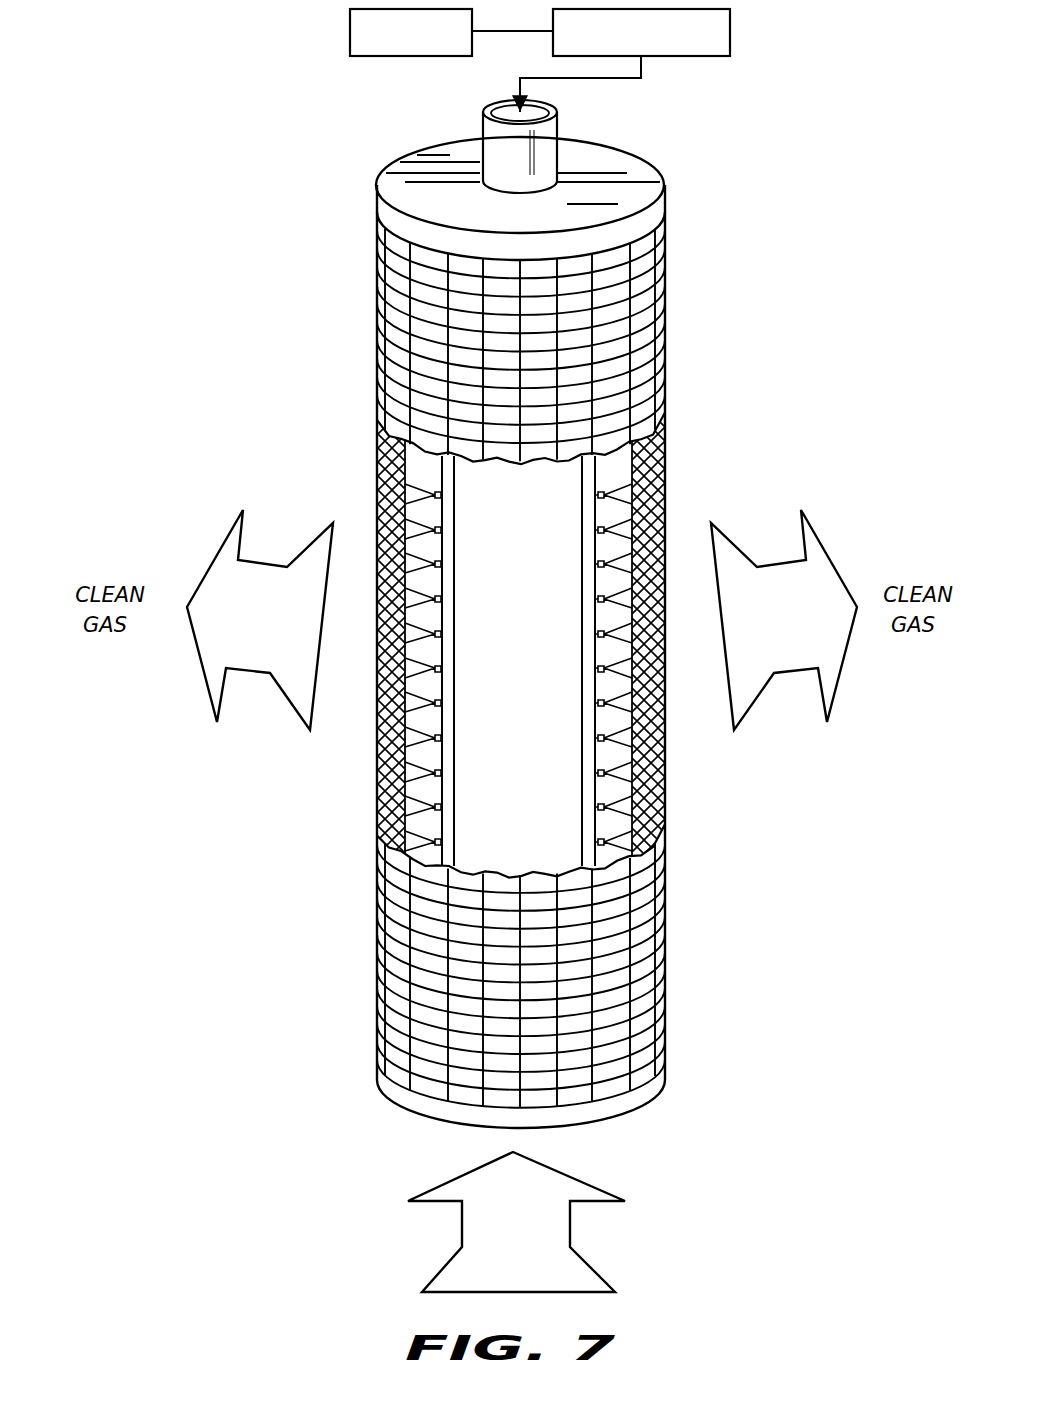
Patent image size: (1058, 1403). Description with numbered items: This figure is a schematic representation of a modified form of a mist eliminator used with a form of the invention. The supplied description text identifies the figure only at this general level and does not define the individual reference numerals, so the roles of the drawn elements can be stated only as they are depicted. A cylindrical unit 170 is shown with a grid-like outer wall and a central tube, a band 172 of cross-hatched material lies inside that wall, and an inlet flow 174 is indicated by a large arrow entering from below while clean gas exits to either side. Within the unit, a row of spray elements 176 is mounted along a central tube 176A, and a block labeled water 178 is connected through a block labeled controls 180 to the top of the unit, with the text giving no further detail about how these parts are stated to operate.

The filter cartridge 170 is at (655, 212).
The filter medium 172 is at (657, 784).
The dirty gas inlet flow 174 is at (570, 1229).
The spray nozzles 176 is at (446, 757).
The water supply tube 176A is at (590, 817).
The water source 178 is at (350, 40).
The controls 180 is at (730, 39).